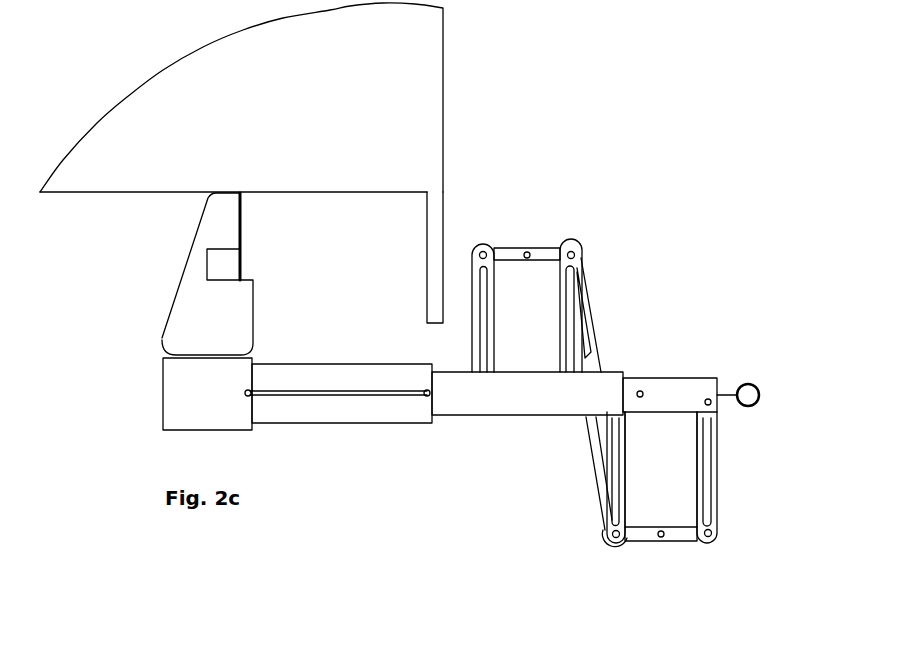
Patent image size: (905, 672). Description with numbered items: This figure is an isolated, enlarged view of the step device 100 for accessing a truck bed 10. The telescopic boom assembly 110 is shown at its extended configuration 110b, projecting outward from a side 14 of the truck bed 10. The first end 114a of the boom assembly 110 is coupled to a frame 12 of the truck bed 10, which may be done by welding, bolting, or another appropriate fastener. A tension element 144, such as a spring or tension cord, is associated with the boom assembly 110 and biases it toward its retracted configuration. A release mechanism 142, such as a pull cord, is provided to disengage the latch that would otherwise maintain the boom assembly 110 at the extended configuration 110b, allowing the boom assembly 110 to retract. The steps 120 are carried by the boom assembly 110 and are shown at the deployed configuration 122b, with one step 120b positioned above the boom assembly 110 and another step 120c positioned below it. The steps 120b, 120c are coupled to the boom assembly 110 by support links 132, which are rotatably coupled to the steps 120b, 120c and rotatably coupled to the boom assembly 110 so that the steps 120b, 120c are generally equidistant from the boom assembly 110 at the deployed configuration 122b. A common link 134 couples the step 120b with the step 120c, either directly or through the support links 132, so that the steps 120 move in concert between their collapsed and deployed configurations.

The truck bed 10 is at (447, 139).
The side of the truck bed 14 is at (443, 41).
The frame 12 is at (152, 352).
The step device 100 is at (621, 368).
The telescopic boom assembly 110 is at (397, 429).
The extended configuration 110b is at (507, 418).
The first end 114a is at (259, 428).
The tension element 144 is at (338, 396).
The steps 120 is at (532, 244).
The step 120b is at (552, 246).
The step 120c is at (647, 539).
The deployed configuration 122b is at (498, 244).
The support links 132 is at (628, 450).
The common link 134 is at (596, 340).
The release mechanism 142 is at (754, 381).